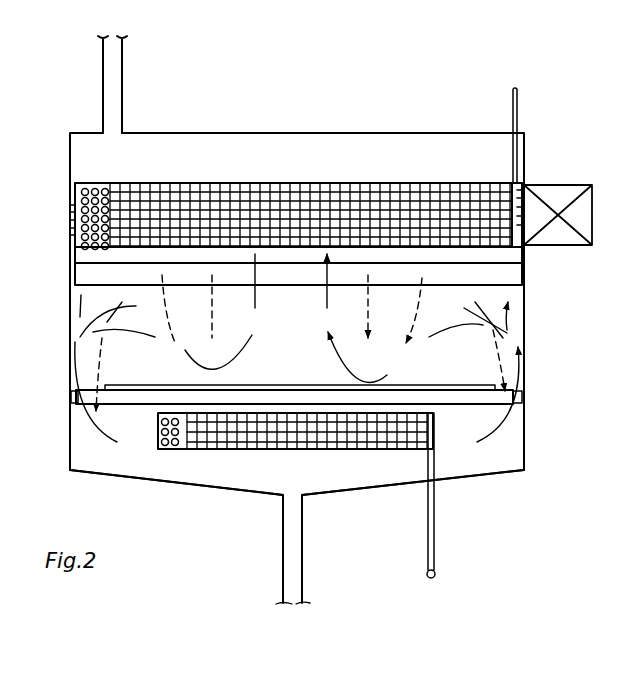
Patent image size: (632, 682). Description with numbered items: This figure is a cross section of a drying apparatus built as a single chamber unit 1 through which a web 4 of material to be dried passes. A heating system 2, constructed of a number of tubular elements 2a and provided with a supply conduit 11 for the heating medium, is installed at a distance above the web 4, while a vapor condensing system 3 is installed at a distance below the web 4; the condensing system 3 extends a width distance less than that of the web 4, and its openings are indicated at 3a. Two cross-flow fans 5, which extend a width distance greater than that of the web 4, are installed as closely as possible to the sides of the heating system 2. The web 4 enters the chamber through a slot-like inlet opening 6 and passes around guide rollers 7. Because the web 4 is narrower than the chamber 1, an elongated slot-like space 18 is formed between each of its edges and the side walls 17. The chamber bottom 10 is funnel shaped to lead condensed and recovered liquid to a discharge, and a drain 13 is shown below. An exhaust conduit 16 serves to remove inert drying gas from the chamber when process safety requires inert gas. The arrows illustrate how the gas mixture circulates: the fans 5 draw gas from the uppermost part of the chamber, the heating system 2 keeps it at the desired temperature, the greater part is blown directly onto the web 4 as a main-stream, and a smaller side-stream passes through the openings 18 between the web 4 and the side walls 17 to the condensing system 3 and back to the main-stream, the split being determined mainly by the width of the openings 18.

The single chamber unit 1 is at (529, 292).
The heating system 2 is at (457, 176).
The tubular elements 2a is at (142, 187).
The vapor condensing system 3 is at (325, 447).
The nozzle openings of lower tray 3a is at (198, 449).
The web 4 is at (275, 388).
The cross-flow fans 5 is at (524, 185).
The inlet opening 6 is at (460, 388).
The guide rollers 7 is at (466, 402).
The chamber bottom 10 is at (366, 488).
The supply conduit 11 is at (519, 110).
The drain pipe 13 is at (437, 526).
The exhaust conduit 16 is at (123, 82).
The side walls 17 is at (524, 432).
The elongated slot-like space 18 is at (510, 390).